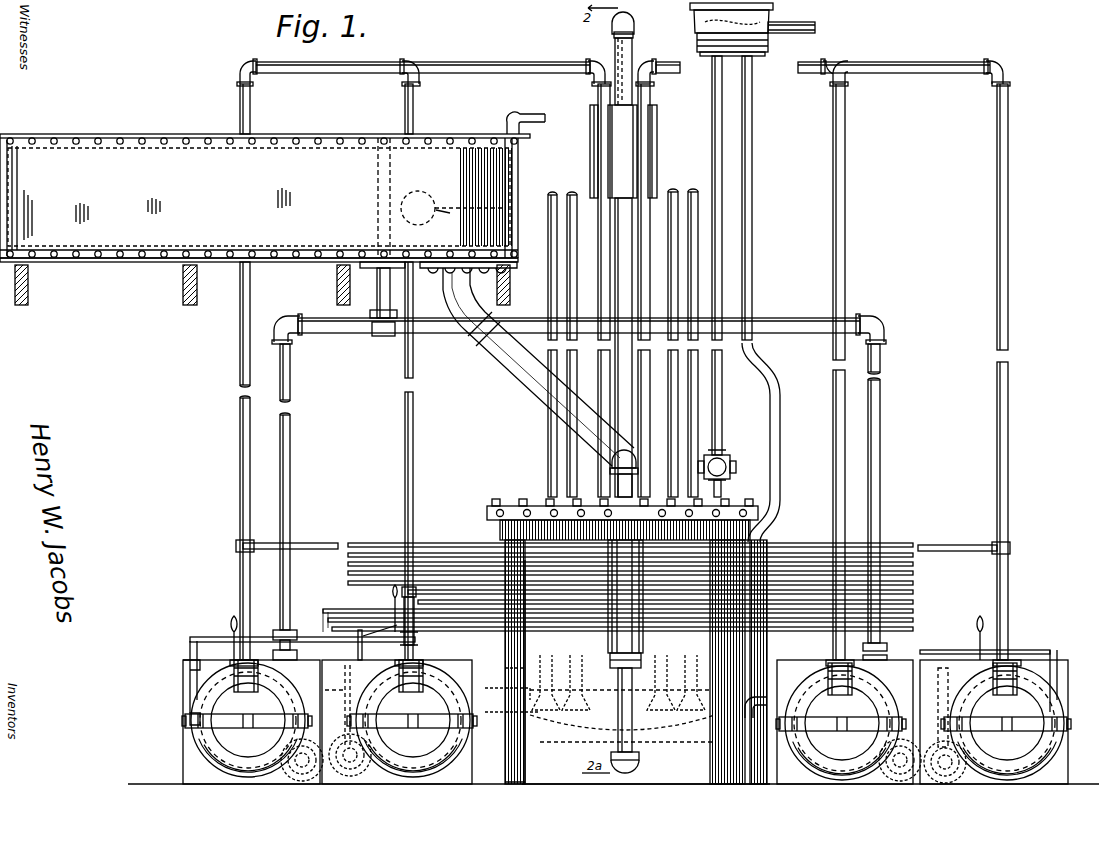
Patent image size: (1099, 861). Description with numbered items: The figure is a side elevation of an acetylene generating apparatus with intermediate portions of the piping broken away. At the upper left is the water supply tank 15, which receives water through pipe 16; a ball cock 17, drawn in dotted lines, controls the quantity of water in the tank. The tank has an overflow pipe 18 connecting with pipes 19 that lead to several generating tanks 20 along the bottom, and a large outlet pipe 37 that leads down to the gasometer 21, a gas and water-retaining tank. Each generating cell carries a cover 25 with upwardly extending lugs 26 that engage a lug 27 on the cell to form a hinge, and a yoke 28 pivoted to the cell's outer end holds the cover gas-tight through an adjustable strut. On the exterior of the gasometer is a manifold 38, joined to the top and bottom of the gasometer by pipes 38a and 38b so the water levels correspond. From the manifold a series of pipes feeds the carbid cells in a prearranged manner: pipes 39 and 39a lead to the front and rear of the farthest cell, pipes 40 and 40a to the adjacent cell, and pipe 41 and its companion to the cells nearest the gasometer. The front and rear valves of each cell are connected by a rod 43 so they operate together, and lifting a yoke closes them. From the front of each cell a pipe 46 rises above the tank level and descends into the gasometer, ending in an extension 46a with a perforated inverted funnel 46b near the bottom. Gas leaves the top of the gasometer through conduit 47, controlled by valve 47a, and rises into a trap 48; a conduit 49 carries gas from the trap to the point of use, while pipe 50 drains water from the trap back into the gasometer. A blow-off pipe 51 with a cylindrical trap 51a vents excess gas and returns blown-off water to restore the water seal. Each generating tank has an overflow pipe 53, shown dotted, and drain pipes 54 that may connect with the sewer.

The water supply tank 15 is at (265, 219).
The water supply pipe 16 is at (518, 118).
The ball cock 17 is at (436, 195).
The overflow pipe 18 is at (377, 172).
The pipes 19 is at (290, 418).
The generating tanks 20 is at (183, 773).
The gasometer 21 is at (765, 529).
The covers 25 is at (198, 752).
The lugs 26 is at (262, 672).
The lug 27 is at (232, 668).
The yoke 28 is at (185, 733).
The large outlet pipe 37 is at (510, 365).
The manifold 38 is at (640, 558).
The pipe 38a is at (612, 466).
The pipe 38b is at (640, 758).
The pipe 39 is at (433, 590).
The pipe 39a is at (502, 664).
The pipe 40 is at (460, 560).
The pipe 40a is at (345, 638).
The pipe 41 is at (445, 590).
The rod 43 is at (232, 640).
The pipe or conduit 46 is at (410, 95).
The extension 46a is at (504, 689).
The inverted funnel shaped member 46b is at (508, 711).
The pipe or conduit 47 is at (722, 272).
The valve 47a is at (727, 458).
The trap 48 is at (768, 45).
The conduit 49 is at (815, 28).
The pipe 50 is at (752, 186).
The blow-off pipe 51 is at (634, 42).
The cylindrical trap 51a is at (657, 133).
The overflow pipe 53 is at (942, 640).
The drain pipes 54 is at (623, 760).